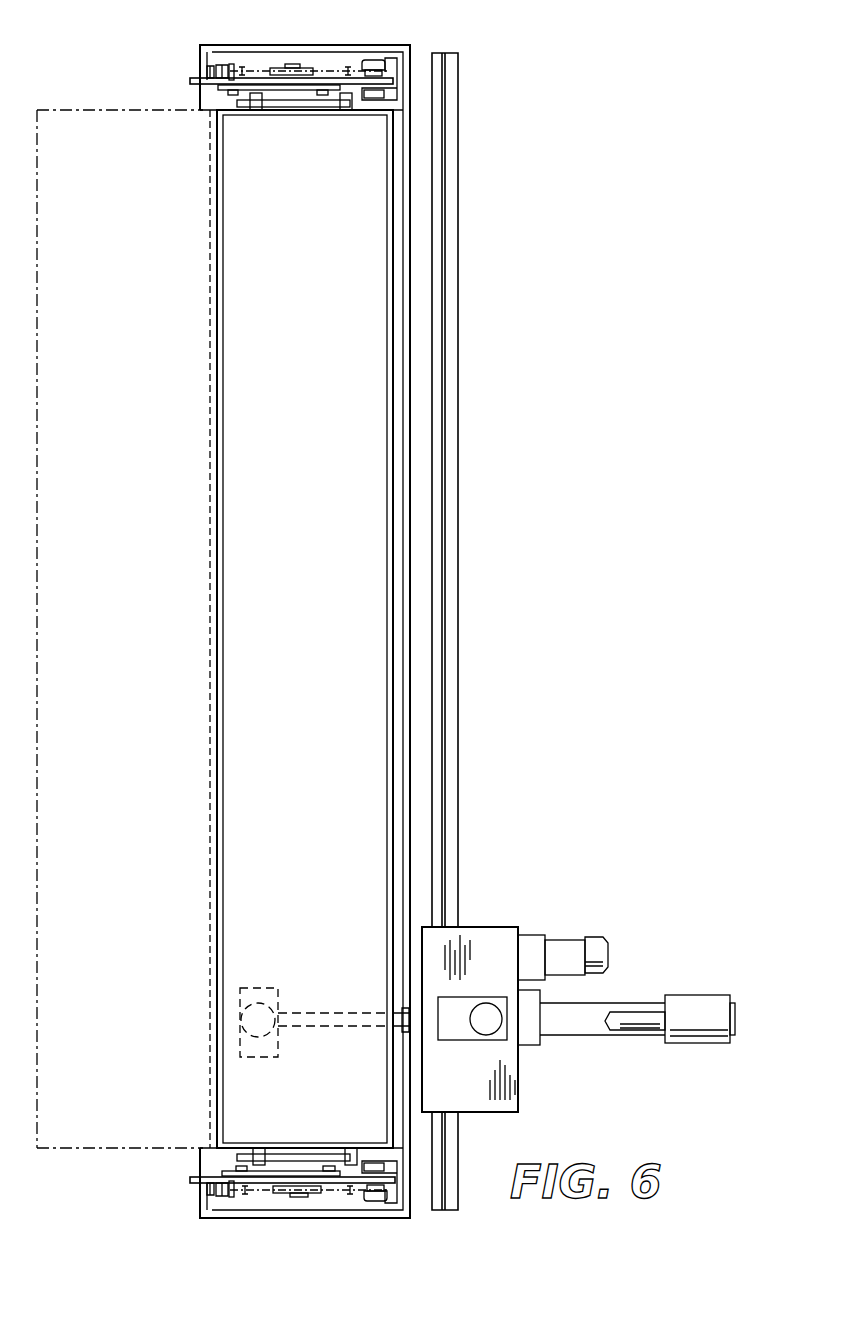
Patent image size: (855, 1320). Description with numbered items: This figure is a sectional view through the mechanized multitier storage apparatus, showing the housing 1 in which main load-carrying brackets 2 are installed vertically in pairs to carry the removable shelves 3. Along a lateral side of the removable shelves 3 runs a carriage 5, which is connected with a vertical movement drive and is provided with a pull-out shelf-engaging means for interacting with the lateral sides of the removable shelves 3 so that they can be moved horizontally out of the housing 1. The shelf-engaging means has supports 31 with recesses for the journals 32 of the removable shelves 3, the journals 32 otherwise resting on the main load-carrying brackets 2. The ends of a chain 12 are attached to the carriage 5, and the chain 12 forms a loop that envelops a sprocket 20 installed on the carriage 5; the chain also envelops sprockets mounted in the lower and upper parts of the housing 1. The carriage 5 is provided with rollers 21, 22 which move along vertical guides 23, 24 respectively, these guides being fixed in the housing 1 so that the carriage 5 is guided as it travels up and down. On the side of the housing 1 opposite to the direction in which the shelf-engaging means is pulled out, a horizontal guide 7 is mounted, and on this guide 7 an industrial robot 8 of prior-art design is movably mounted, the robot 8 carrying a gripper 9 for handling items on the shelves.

The housing 1 is at (410, 582).
The main load-carrying brackets 2 is at (305, 108).
The removable shelves 3 is at (382, 250).
The carriages 5 is at (188, 80).
The horizontal guide 7 is at (456, 353).
The industrial robot 8 is at (568, 925).
The gripper 9 is at (262, 990).
The chain 12 is at (243, 66).
The sprocket 20 is at (303, 68).
The roller 21 is at (372, 62).
The roller 22 is at (221, 64).
The vertical guide 23 is at (400, 90).
The vertical guide 24 is at (208, 66).
The supports 31 is at (327, 96).
The journals 32 is at (257, 111).